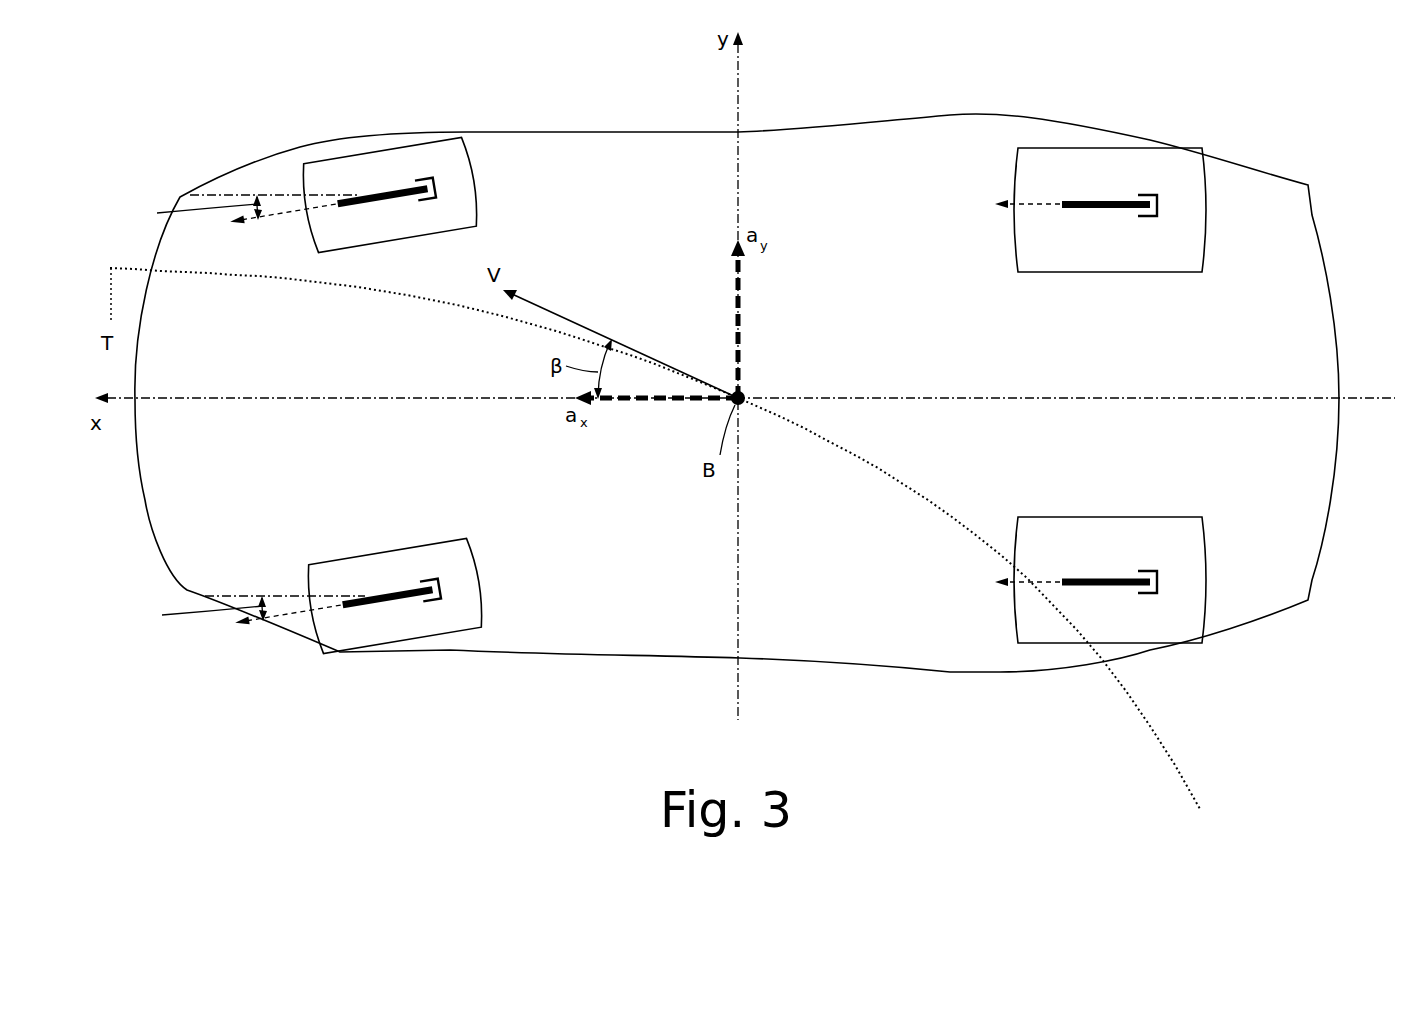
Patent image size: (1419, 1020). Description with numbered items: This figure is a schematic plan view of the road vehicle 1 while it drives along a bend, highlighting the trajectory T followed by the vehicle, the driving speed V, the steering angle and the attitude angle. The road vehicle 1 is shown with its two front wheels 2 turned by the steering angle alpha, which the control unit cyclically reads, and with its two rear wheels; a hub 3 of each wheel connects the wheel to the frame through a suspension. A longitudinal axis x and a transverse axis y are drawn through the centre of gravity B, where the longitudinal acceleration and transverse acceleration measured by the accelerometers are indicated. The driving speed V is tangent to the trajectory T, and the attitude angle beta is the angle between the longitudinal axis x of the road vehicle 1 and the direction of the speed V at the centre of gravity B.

The road vehicle 1 is at (1290, 700).
The front wheels 2 is at (458, 160).
The hub 3 is at (1188, 165).